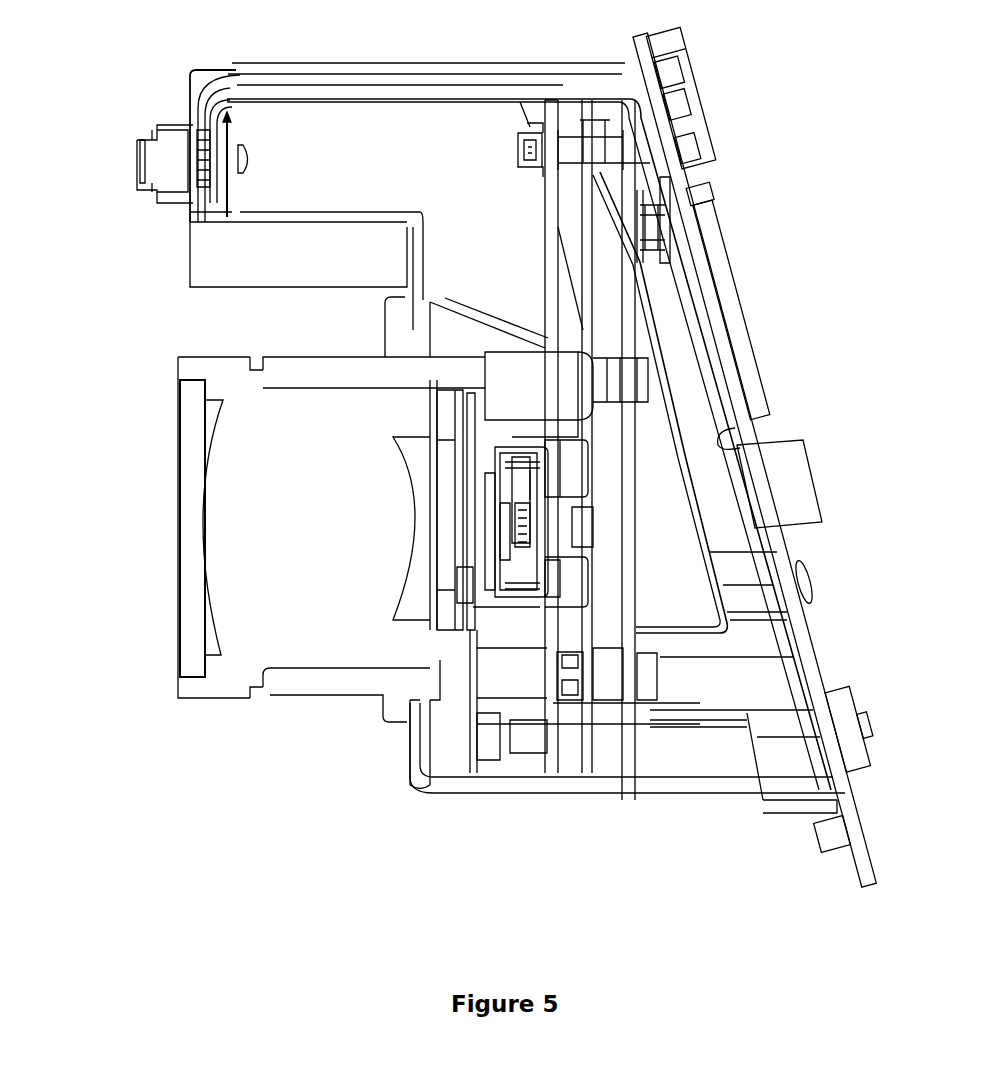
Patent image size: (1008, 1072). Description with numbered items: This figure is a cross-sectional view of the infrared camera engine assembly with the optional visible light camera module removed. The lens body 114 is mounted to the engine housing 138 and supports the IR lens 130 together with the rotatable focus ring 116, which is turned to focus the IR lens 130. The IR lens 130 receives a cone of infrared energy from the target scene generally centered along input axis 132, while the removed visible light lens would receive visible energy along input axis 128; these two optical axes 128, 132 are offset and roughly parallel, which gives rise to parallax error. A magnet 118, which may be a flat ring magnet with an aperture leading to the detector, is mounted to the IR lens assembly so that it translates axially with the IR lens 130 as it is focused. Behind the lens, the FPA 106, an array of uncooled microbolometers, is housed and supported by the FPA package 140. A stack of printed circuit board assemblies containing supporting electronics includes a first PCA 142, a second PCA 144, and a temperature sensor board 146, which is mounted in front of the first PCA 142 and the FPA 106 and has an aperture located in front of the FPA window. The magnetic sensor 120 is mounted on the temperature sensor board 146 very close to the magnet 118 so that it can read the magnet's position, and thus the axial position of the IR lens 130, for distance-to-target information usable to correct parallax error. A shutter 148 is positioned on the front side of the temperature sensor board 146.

The FPA 106 is at (500, 528).
The lens body 114 is at (377, 360).
The rotatable focus ring 116 is at (187, 358).
The magnet 118 is at (445, 405).
The magnetic sensor 120 is at (450, 650).
The input axis 128 is at (150, 155).
The IR lens 130 is at (240, 598).
The input axis 132 is at (188, 527).
The engine housing 138 is at (414, 170).
The FPA package 140 is at (540, 472).
The first PCA 142 is at (547, 735).
The second PCA 144 is at (630, 753).
The temperature sensor board 146 is at (470, 737).
The shutter 148 is at (457, 580).